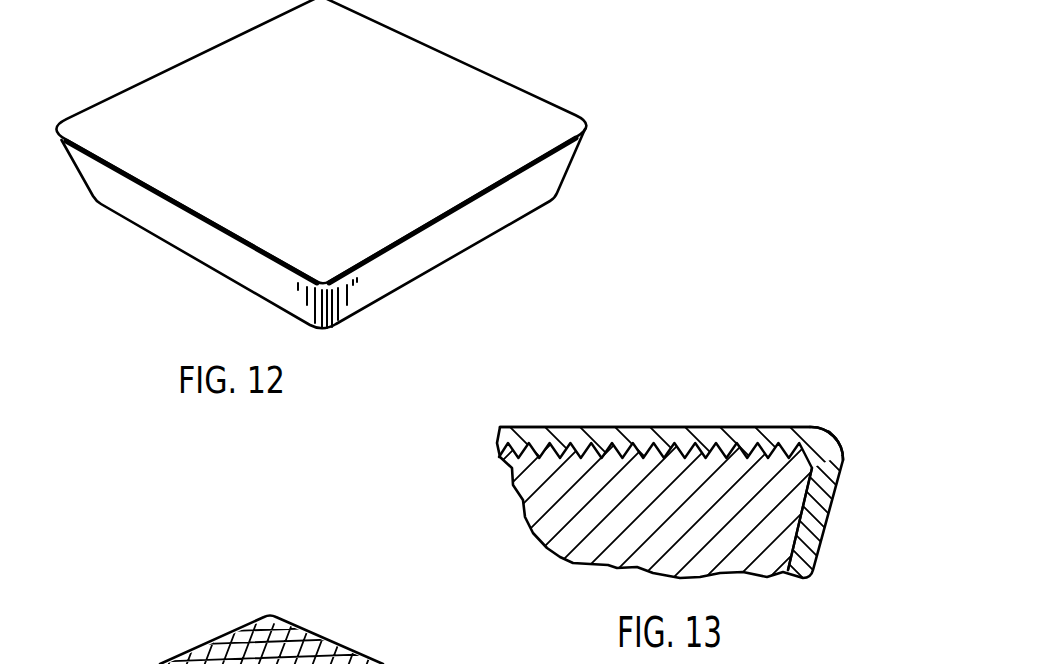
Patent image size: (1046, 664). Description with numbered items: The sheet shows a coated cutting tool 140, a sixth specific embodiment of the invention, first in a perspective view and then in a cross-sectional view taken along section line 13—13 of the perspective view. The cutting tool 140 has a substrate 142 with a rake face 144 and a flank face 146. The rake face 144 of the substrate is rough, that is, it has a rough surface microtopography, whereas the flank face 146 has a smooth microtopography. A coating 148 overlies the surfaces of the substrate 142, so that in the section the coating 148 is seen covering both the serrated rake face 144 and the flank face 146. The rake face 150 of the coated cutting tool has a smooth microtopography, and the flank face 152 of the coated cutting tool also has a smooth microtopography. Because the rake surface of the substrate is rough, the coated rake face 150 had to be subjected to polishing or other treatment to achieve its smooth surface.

In FIG. 12, the cutting tool 140 is at (353, 164).
In FIG. 13, the cutting tool 140 is at (629, 458).
In FIG. 13, the substrate 142 is at (575, 546).
In FIG. 13, the rake face 144 is at (619, 446).
In FIG. 13, the flank face 146 is at (800, 517).
In FIG. 13, the coating 148 is at (830, 477).
In FIG. 12, the rake face of the coated cutting tool 150 is at (530, 101).
In FIG. 13, the rake face of the coated cutting tool 150 is at (781, 427).
In FIG. 12, the flank face of the coated cutting tool 152 is at (549, 173).
In FIG. 13, the flank face of the coated cutting tool 152 is at (815, 560).
In FIG. 12, the section line 13 is at (202, 165).